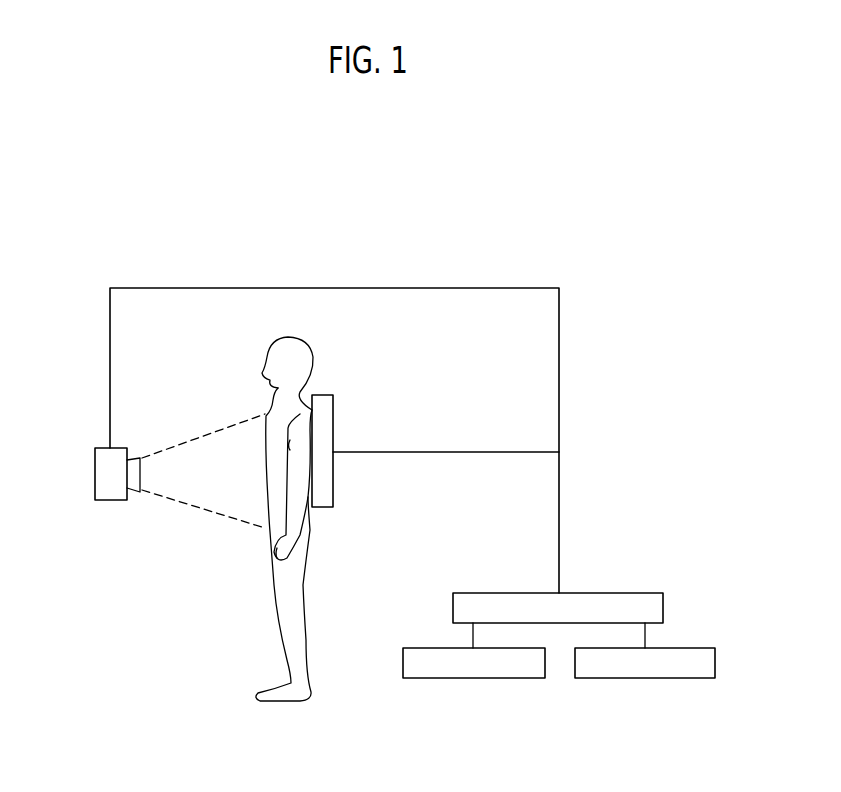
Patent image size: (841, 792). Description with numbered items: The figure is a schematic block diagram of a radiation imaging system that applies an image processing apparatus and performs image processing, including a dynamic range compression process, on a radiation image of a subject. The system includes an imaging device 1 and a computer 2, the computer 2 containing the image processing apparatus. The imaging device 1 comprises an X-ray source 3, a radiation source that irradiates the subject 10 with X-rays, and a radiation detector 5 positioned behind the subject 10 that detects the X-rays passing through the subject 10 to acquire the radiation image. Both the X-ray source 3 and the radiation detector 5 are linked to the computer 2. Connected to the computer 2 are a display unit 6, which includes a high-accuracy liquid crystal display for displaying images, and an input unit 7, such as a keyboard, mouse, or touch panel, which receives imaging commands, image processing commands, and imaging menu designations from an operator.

The imaging device 1 is at (137, 262).
The computer 2 is at (665, 603).
The X-ray source 3 is at (95, 468).
The radiation detector 5 is at (333, 412).
The display unit 6 is at (507, 678).
The input unit 7 is at (677, 678).
The subject 10 is at (272, 340).